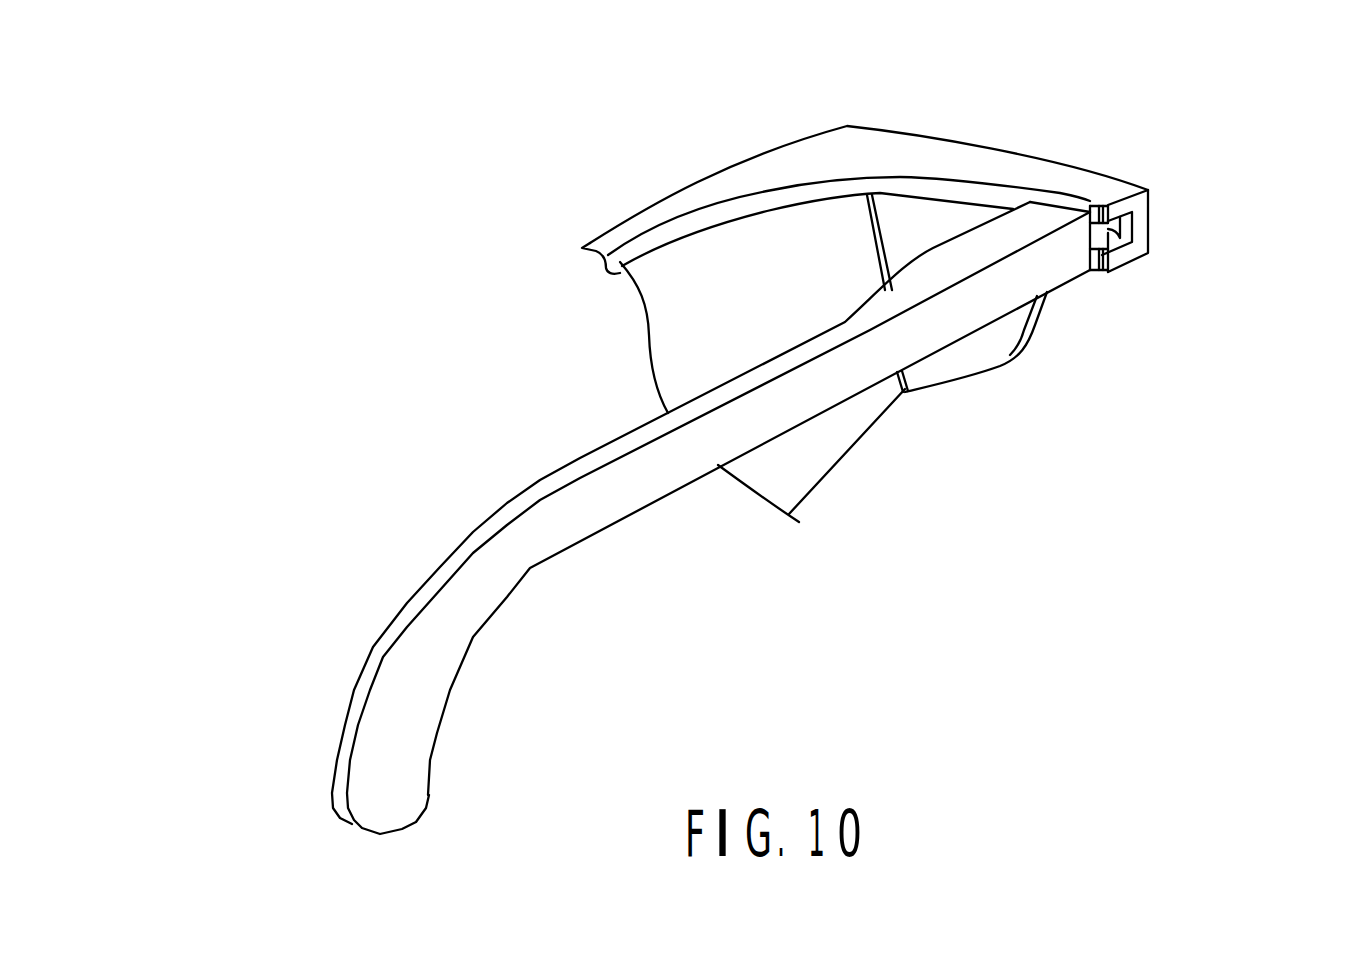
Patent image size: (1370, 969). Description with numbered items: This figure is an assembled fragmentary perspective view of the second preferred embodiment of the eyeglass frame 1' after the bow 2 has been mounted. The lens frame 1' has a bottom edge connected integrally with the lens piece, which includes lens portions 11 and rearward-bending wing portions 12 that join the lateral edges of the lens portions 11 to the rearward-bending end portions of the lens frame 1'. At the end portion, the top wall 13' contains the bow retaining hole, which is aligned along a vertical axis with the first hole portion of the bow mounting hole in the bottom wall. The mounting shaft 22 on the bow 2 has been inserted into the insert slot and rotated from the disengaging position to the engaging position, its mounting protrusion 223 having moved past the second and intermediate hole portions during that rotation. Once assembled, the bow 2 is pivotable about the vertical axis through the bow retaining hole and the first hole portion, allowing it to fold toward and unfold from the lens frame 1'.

The eyeglass frame 1' is at (854, 451).
The top wall 13' is at (865, 180).
The mounting shaft 22 is at (1112, 226).
The mounting protrusion 223 is at (1092, 246).
The lens portions 11 is at (818, 438).
The rearward-bending wing portions 12 is at (963, 356).
The bow 2 is at (640, 506).